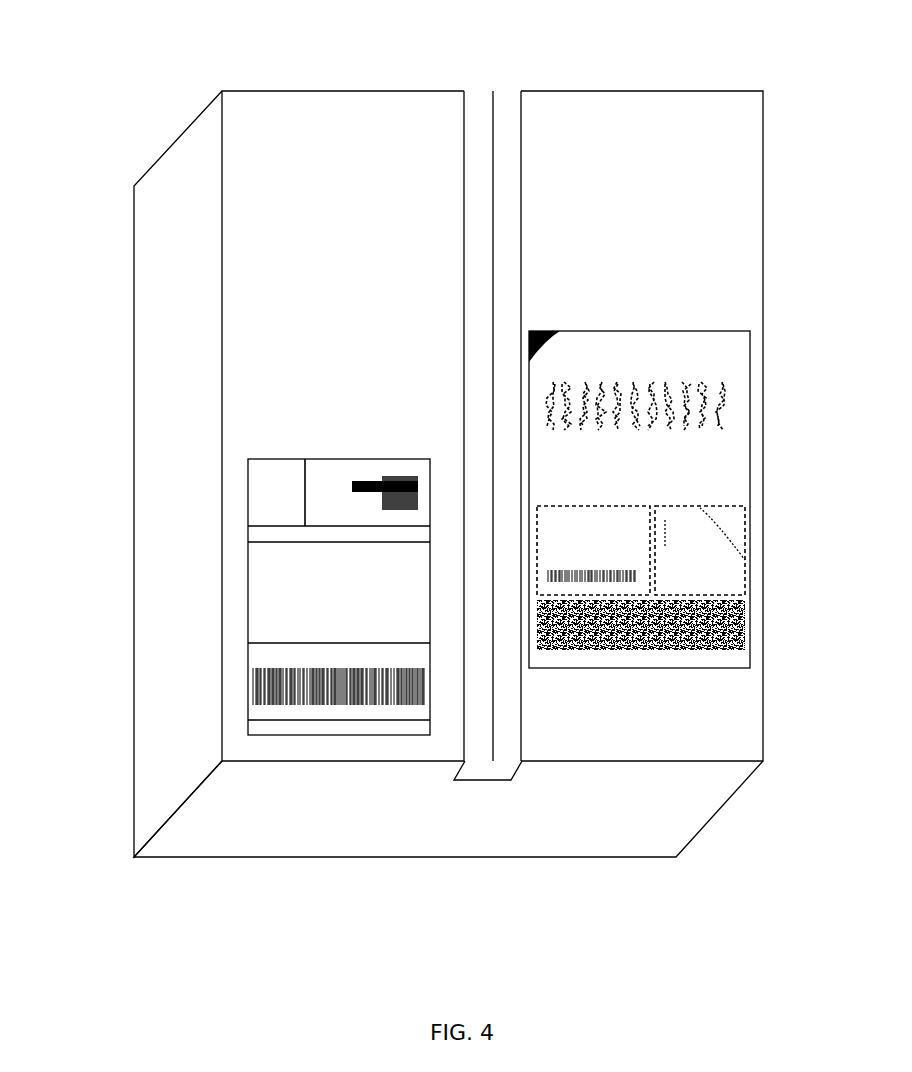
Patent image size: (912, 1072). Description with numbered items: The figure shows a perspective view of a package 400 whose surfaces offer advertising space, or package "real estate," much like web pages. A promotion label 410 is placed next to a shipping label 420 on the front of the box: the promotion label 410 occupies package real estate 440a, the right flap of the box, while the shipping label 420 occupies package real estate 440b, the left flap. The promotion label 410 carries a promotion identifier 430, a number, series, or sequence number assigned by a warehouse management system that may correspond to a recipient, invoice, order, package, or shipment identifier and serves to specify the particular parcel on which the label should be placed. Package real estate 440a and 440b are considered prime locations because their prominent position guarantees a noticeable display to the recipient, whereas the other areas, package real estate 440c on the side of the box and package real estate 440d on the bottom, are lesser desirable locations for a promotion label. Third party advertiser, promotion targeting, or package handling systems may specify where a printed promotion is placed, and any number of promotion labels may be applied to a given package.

The package 400 is at (527, 90).
The promotion label 410 is at (639, 509).
The shipping label 420 is at (388, 459).
The promotion identifier 430 is at (628, 670).
The package real estate 440a is at (653, 239).
The package real estate 440b is at (353, 307).
The package real estate 440c is at (190, 183).
The package real estate 440d is at (432, 828).